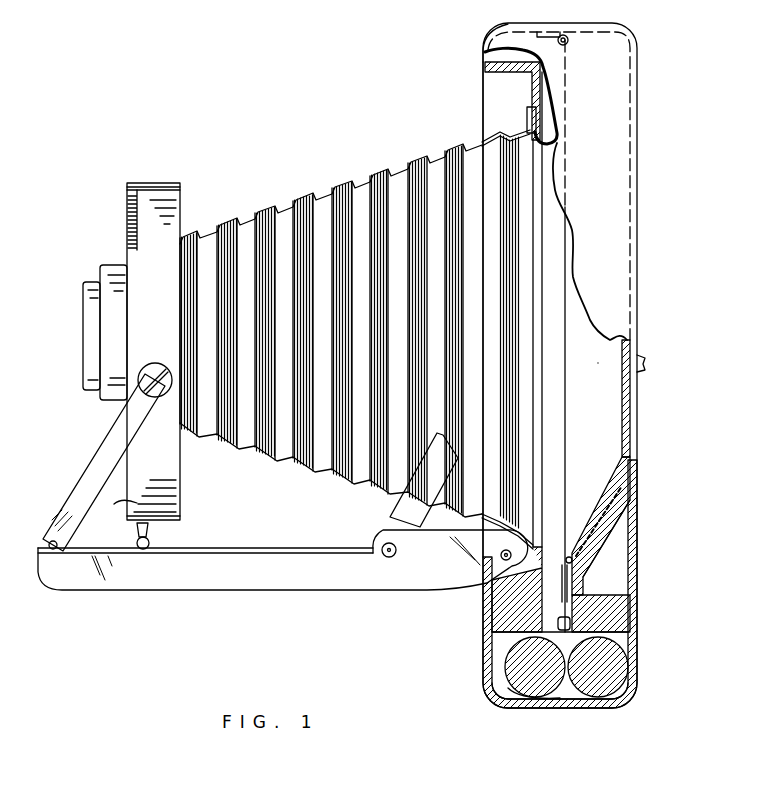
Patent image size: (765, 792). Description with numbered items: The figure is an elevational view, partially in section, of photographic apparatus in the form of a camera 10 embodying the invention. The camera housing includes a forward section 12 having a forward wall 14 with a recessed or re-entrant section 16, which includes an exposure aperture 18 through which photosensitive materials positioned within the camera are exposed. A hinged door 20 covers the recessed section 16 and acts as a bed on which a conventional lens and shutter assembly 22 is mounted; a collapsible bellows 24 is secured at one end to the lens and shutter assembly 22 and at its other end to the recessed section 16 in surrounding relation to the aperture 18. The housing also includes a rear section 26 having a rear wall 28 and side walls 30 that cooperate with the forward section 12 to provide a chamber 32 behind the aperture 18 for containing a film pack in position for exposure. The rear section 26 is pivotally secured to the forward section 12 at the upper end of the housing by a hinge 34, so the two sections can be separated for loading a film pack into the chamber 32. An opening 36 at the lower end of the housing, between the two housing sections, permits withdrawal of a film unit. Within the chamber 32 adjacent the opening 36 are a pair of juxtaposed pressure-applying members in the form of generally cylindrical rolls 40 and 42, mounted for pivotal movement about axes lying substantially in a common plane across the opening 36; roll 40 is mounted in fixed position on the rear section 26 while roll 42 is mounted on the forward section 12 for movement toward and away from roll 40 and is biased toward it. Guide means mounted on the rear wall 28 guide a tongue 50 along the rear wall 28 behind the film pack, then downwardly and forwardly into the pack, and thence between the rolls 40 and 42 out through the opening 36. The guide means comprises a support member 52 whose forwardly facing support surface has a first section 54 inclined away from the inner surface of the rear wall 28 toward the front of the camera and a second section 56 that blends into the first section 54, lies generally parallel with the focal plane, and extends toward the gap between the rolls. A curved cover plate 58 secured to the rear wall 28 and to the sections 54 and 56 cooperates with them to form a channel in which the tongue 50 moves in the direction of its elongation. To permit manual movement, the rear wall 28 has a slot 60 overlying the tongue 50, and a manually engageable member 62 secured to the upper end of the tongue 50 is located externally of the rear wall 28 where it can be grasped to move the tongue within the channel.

The camera 10 is at (315, 98).
The forward section 12 is at (477, 121).
The forward wall 14 is at (484, 52).
The recessed section 16 is at (552, 548).
The exposure aperture 18 is at (550, 143).
The hinged door 20 is at (322, 580).
The lens and shutter assembly 22 is at (166, 182).
The collapsible bellows 24 is at (362, 178).
The rear section 26 is at (644, 107).
The rear wall 28 is at (635, 482).
The side walls 30 is at (605, 185).
The chamber 32 is at (598, 363).
The hinge 34 is at (548, 33).
The opening 36 is at (570, 700).
The roll 40 is at (633, 691).
The roll 42 is at (517, 693).
The tongue 50 is at (634, 415).
The support member 52 is at (586, 549).
The first section 54 is at (599, 505).
The second section 56 is at (578, 589).
The curved cover plate 58 is at (578, 556).
The slot 60 is at (633, 393).
The manually engageable member 62 is at (644, 363).